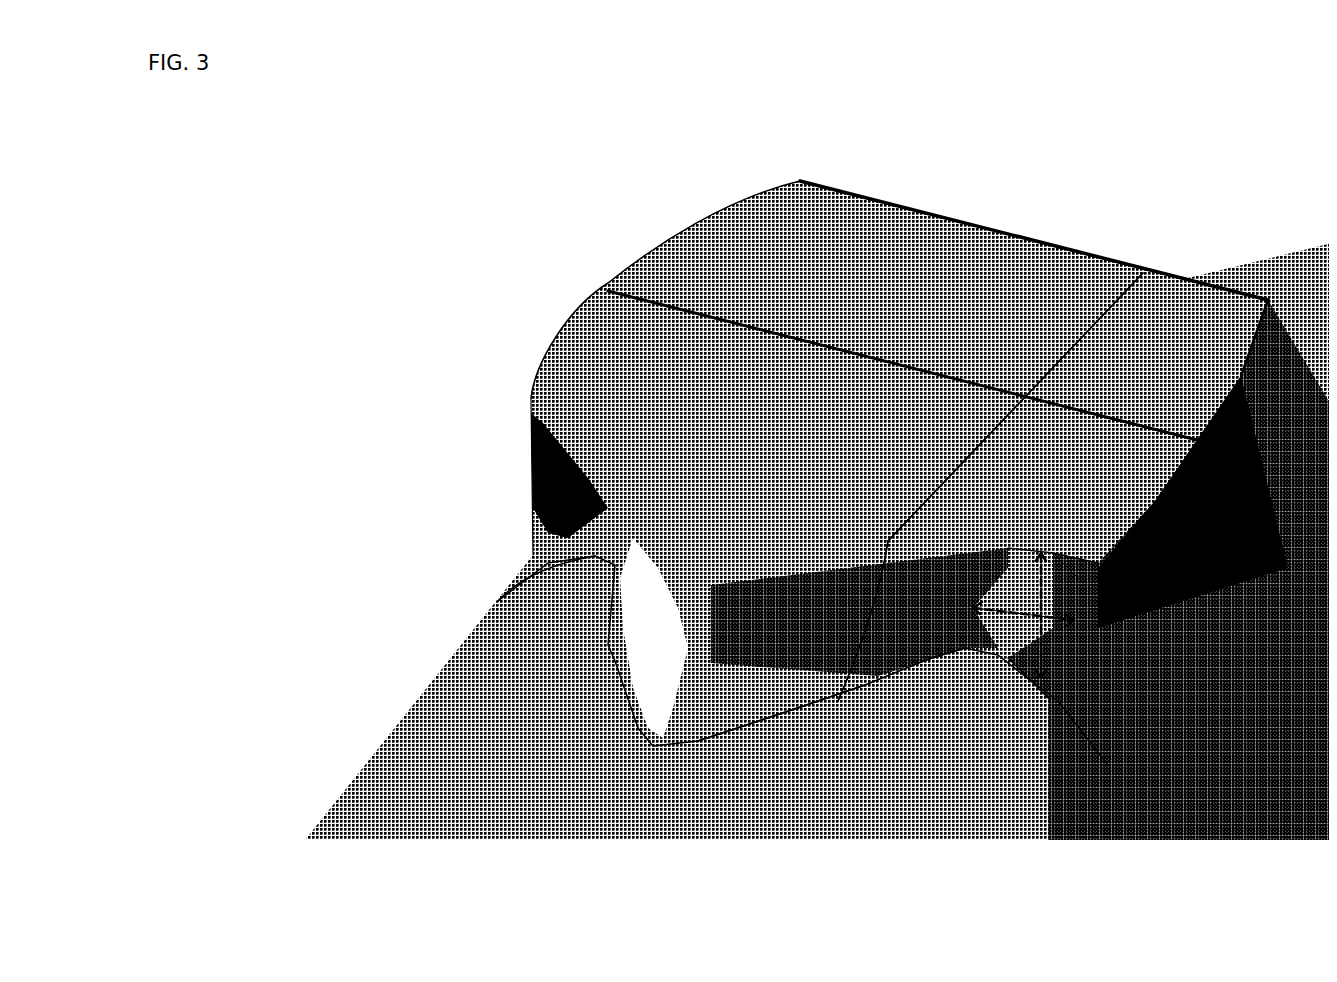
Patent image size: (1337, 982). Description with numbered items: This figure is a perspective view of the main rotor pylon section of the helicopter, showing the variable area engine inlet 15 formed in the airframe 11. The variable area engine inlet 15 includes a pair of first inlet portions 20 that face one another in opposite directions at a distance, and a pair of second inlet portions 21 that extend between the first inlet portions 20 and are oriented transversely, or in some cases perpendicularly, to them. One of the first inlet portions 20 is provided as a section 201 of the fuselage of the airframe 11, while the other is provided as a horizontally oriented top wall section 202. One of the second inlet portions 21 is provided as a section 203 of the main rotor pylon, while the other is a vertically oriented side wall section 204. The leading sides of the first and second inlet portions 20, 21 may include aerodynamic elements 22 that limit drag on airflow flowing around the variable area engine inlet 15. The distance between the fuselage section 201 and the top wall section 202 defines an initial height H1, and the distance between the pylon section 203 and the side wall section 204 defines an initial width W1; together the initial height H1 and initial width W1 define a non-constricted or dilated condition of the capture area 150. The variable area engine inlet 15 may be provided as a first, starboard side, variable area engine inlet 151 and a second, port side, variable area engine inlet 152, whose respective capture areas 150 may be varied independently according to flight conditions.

The airframe 11 is at (375, 738).
The variable area engine inlet 15 is at (528, 384).
The first inlet portions 20 is at (1023, 615).
The section of fuselage 201 is at (1004, 637).
The horizontally oriented top wall section 202 is at (1005, 540).
The second inlet portions 21 is at (1015, 407).
The section of main rotor pylon 203 is at (947, 605).
The vertically oriented side wall section 204 is at (1082, 595).
The aerodynamic elements 22 is at (1072, 572).
The capture area 150 is at (820, 519).
The first variable area engine inlet 151 is at (985, 612).
The second variable area engine inlet 152 is at (603, 532).
The initial width W1 is at (1052, 622).
The initial height H1 is at (1037, 653).